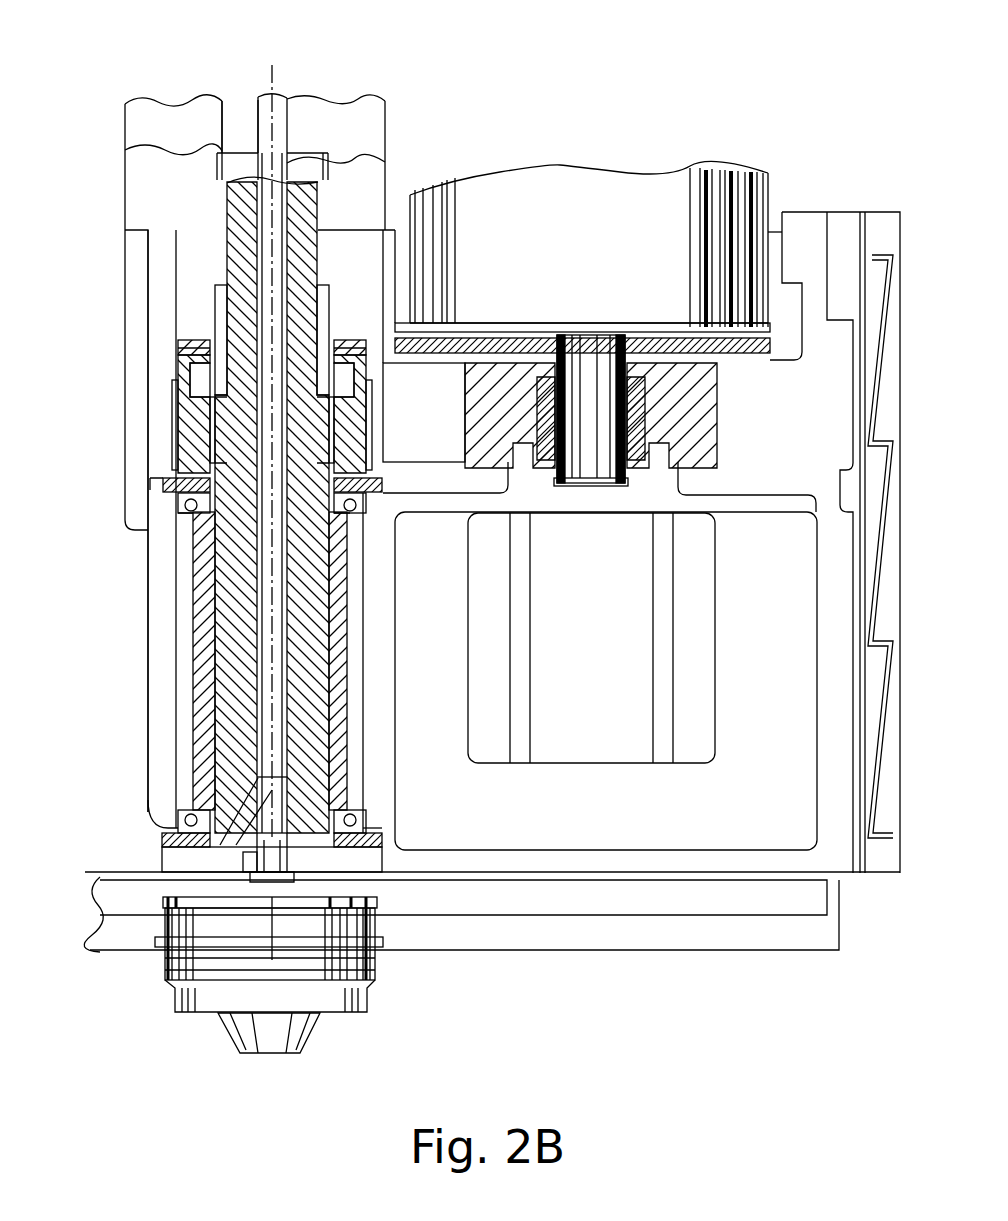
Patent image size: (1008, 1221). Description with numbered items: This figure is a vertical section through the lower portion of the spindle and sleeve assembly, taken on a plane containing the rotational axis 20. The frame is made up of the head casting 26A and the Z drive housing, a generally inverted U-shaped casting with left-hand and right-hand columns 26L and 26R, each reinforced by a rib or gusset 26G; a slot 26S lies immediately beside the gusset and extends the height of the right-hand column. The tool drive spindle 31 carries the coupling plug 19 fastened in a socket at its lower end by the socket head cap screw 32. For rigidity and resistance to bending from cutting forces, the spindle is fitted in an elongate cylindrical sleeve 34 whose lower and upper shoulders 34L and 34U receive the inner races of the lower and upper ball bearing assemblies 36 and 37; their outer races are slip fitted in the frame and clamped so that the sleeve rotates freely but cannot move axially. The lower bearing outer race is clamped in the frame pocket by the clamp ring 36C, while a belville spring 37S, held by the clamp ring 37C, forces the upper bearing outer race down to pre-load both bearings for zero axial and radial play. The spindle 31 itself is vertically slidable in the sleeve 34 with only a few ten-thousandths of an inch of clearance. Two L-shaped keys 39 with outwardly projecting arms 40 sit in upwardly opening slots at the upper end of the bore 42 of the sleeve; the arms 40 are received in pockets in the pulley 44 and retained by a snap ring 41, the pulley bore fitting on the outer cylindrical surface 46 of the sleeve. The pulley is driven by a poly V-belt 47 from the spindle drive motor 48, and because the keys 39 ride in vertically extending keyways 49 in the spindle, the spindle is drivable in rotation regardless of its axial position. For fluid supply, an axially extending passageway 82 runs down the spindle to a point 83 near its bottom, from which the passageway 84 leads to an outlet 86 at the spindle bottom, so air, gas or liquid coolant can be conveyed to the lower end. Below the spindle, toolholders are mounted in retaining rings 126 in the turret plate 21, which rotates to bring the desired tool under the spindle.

The coupling plug 19 is at (250, 880).
The axis 20 is at (270, 83).
The turret plate 21 is at (558, 937).
The head casting 26A is at (160, 690).
The gusset 26G is at (233, 118).
The left-hand column 26L is at (157, 209).
The right-hand column 26R is at (167, 136).
The housing sleeve 26S is at (277, 100).
The tool drive spindle 31 is at (222, 262).
The socket head cap screw 32 is at (273, 838).
The elongate cylindrical sleeve 34 is at (205, 628).
The lower shoulder 34L is at (352, 825).
The upper shoulder 34U is at (186, 511).
The lower ball bearing assembly 36 is at (176, 826).
The clamp ring 36C is at (172, 840).
The upper ball bearing assembly 37 is at (182, 500).
The clamp ring 37C is at (165, 487).
The belville spring 37S is at (363, 497).
The L-shaped keys 39 is at (176, 392).
The outwardly projecting arms 40 is at (180, 348).
The snap ring 41 is at (178, 342).
The bore 42 is at (212, 446).
The pulley 44 is at (190, 366).
The outer cylindrical surface 46 is at (215, 462).
The poly V-belt 47 is at (178, 418).
The spindle drive motor 48 is at (615, 265).
The keyways 49 is at (222, 330).
The axially extending passageway 82 is at (253, 315).
The point 83 is at (262, 772).
The passageway 84 is at (212, 810).
The outlet 86 is at (240, 865).
The retaining rings 126 is at (163, 962).